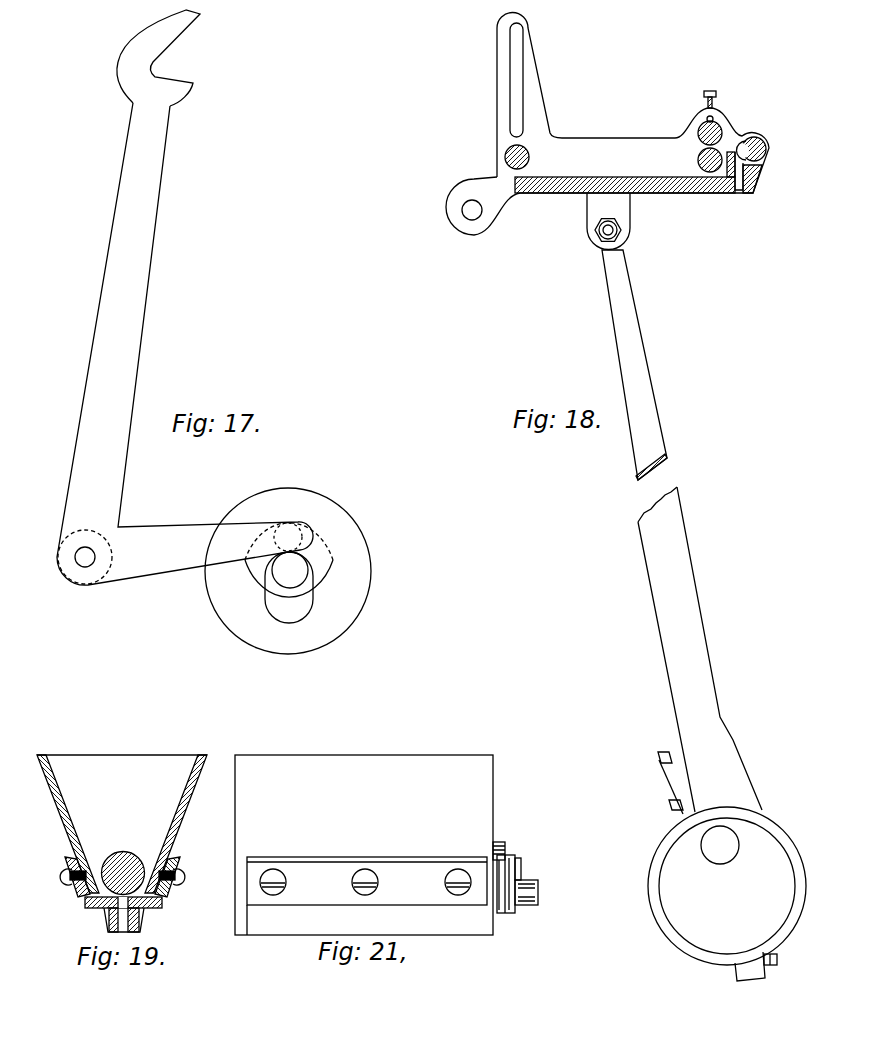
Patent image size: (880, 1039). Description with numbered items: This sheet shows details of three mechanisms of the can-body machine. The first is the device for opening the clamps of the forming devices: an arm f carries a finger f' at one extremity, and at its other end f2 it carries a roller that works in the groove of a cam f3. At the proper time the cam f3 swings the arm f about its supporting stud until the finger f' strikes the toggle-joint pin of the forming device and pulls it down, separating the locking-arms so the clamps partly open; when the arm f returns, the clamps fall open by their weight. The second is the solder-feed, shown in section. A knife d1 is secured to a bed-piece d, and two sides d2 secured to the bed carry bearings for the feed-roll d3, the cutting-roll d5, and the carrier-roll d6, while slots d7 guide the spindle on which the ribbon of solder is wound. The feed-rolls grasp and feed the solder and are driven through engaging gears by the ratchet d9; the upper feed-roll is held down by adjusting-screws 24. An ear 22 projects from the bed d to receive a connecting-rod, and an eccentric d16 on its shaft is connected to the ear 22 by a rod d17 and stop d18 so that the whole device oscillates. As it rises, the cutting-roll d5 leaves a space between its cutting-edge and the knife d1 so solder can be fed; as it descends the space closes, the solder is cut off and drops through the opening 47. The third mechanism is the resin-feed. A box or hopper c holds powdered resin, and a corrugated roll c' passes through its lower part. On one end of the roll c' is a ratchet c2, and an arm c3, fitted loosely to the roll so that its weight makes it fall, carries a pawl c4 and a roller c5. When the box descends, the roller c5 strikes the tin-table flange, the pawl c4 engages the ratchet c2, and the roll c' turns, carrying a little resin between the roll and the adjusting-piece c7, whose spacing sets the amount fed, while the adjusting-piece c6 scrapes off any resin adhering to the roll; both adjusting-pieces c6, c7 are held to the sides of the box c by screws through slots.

In FIG. 17, the arm f is at (185, 344).
In FIG. 17, the finger f' is at (158, 58).
In FIG. 17, the end of arm f2 is at (288, 537).
In FIG. 17, the cam f3 is at (288, 571).
In FIG. 18, the bed-piece d is at (483, 206).
In FIG. 18, the knife d1 is at (738, 194).
In FIG. 18, the sides d2 is at (633, 102).
In FIG. 18, the feed-roll d3 is at (699, 162).
In FIG. 18, the cutting-roll d5 is at (770, 150).
In FIG. 18, the carrier-roll d6 is at (531, 158).
In FIG. 18, the slots d7 is at (512, 80).
In FIG. 18, the ratchet d9 is at (699, 134).
In FIG. 18, the eccentric d16 is at (727, 894).
In FIG. 18, the rod d17 is at (682, 531).
In FIG. 18, the stop d18 is at (654, 805).
In FIG. 18, the ear 22 is at (608, 221).
In FIG. 18, the adjusting-screws 24 is at (705, 94).
In FIG. 18, the opening 47 is at (749, 195).
In FIG. 19, the box or hopper c is at (122, 824).
In FIG. 21, the box or hopper c is at (364, 845).
In FIG. 19, the corrugated roll c' is at (123, 861).
In FIG. 21, the ratchet c2 is at (504, 840).
In FIG. 21, the arm c3 is at (515, 914).
In FIG. 19, the pawl c4 is at (83, 901).
In FIG. 21, the pawl c4 is at (503, 915).
In FIG. 21, the roller c5 is at (540, 893).
In FIG. 21, the adjusting-piece c6 is at (367, 896).
In FIG. 19, the adjusting-piece c7 is at (162, 901).